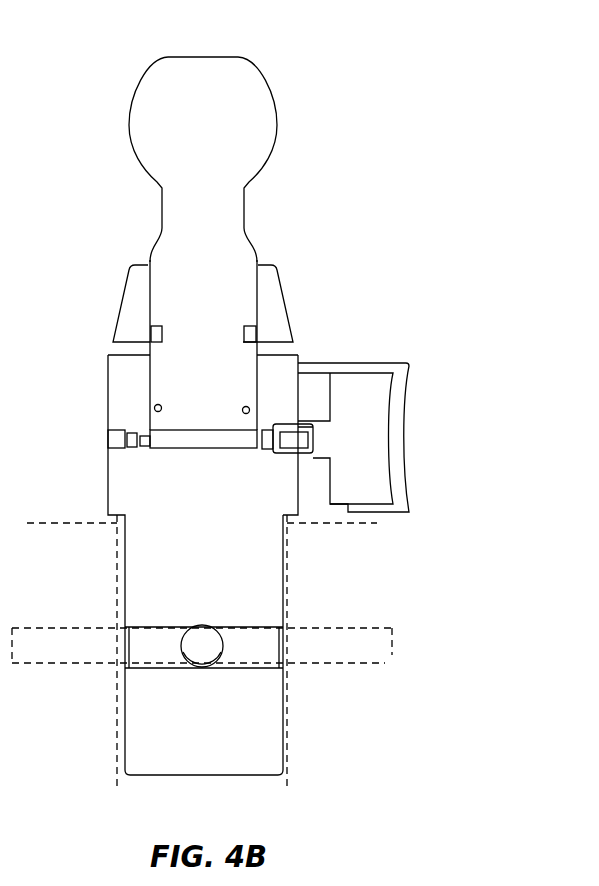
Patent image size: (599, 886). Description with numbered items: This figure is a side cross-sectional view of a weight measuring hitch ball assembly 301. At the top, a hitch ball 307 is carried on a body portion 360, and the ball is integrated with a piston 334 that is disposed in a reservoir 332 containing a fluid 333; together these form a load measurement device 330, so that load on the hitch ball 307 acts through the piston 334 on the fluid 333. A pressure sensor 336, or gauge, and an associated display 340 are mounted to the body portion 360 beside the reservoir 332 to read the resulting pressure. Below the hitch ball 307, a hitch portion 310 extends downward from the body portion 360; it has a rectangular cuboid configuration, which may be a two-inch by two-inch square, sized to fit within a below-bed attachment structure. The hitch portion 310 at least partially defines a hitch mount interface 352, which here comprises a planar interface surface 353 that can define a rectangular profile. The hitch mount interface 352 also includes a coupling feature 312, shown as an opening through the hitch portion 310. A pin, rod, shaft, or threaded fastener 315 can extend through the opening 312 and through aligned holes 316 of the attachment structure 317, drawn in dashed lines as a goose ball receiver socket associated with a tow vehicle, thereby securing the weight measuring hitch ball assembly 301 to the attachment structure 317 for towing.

The weight measuring hitch ball assembly 301 is at (288, 32).
The hitch ball 307 is at (109, 86).
The body portion 360 is at (109, 269).
The load measurement device 330 is at (257, 410).
The pressure sensor 336 is at (356, 351).
The display 340 is at (398, 450).
The piston 334 is at (183, 422).
The fluid 333 is at (204, 434).
The reservoir 332 is at (155, 470).
The hitch mount interface 352 is at (270, 491).
The planar interface surface 353 is at (285, 593).
The coupling feature 312 is at (286, 646).
The fastener 315 is at (241, 663).
The holes 316 is at (385, 667).
The hitch portion 310 is at (241, 652).
The attachment structure 317 is at (287, 740).